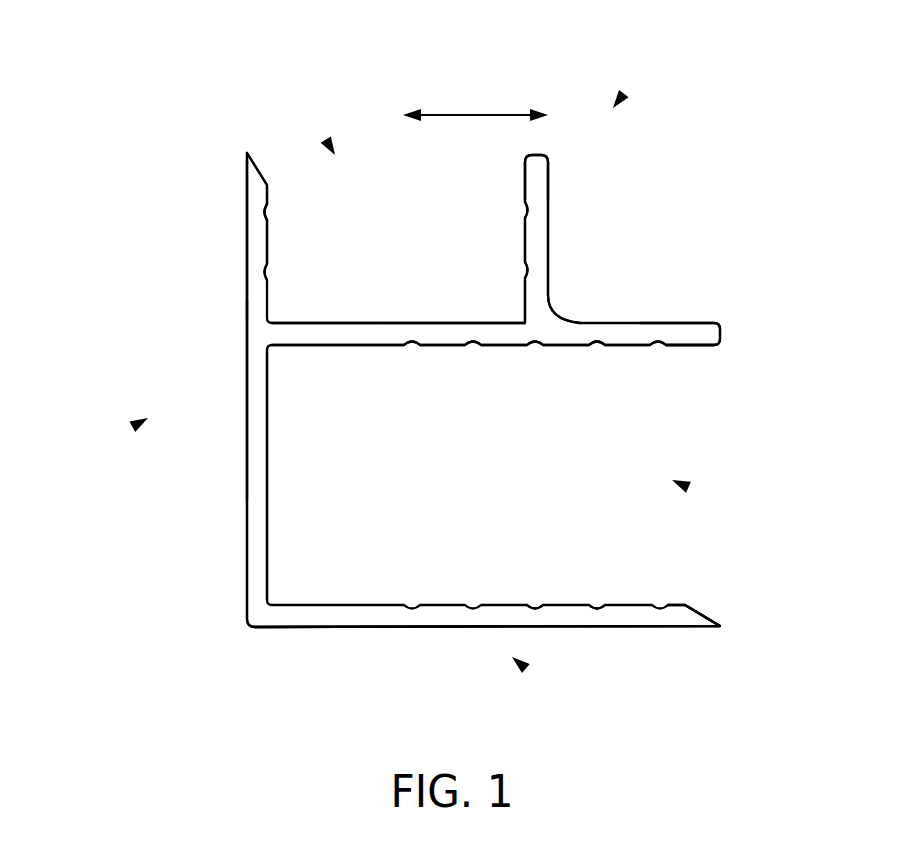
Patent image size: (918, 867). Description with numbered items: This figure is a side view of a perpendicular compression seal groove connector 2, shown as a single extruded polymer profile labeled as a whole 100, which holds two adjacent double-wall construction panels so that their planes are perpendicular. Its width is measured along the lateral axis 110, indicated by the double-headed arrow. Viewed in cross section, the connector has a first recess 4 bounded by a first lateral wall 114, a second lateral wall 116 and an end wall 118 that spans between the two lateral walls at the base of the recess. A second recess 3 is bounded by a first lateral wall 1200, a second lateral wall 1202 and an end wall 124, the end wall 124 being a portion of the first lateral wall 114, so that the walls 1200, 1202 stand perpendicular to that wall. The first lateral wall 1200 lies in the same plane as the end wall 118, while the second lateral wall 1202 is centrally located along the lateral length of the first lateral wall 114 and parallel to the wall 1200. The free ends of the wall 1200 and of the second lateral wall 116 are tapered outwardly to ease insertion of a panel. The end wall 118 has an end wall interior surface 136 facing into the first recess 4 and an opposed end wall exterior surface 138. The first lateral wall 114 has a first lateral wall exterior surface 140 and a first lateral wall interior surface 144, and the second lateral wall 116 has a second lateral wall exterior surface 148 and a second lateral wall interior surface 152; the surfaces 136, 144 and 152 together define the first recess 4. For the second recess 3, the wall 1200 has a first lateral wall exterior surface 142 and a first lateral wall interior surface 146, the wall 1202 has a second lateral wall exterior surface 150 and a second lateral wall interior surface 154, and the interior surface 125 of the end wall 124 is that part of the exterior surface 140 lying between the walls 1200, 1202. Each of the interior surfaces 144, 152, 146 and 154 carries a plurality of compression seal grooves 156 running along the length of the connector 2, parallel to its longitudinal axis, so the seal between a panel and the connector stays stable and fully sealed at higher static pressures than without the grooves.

The perpendicular compression seal groove connector 2 is at (616, 104).
The second recess 3 is at (332, 151).
The first recess 4 is at (680, 482).
The trim profile 100 is at (515, 660).
The lateral axis 110 is at (472, 115).
The first lateral wall 114 is at (552, 333).
The second lateral wall 116 is at (396, 616).
The end wall 118 is at (245, 498).
The end wall 124 is at (385, 323).
The interior surface 125 is at (358, 323).
The end wall interior surface 136 is at (268, 465).
The end wall exterior surface 138 is at (245, 387).
The first lateral wall exterior surface 140 is at (650, 323).
The first lateral wall exterior surface 142 is at (245, 200).
The first lateral wall interior surface 144 is at (443, 347).
The first lateral wall interior surface 146 is at (268, 242).
The second lateral wall exterior surface 148 is at (598, 628).
The second lateral wall exterior surface 150 is at (548, 237).
The second lateral wall interior surface 152 is at (595, 347).
The second lateral wall interior surface 154 is at (525, 240).
The compression seal grooves 156 is at (266, 218).
The first lateral wall 1200 is at (245, 277).
The second lateral wall 1202 is at (548, 177).